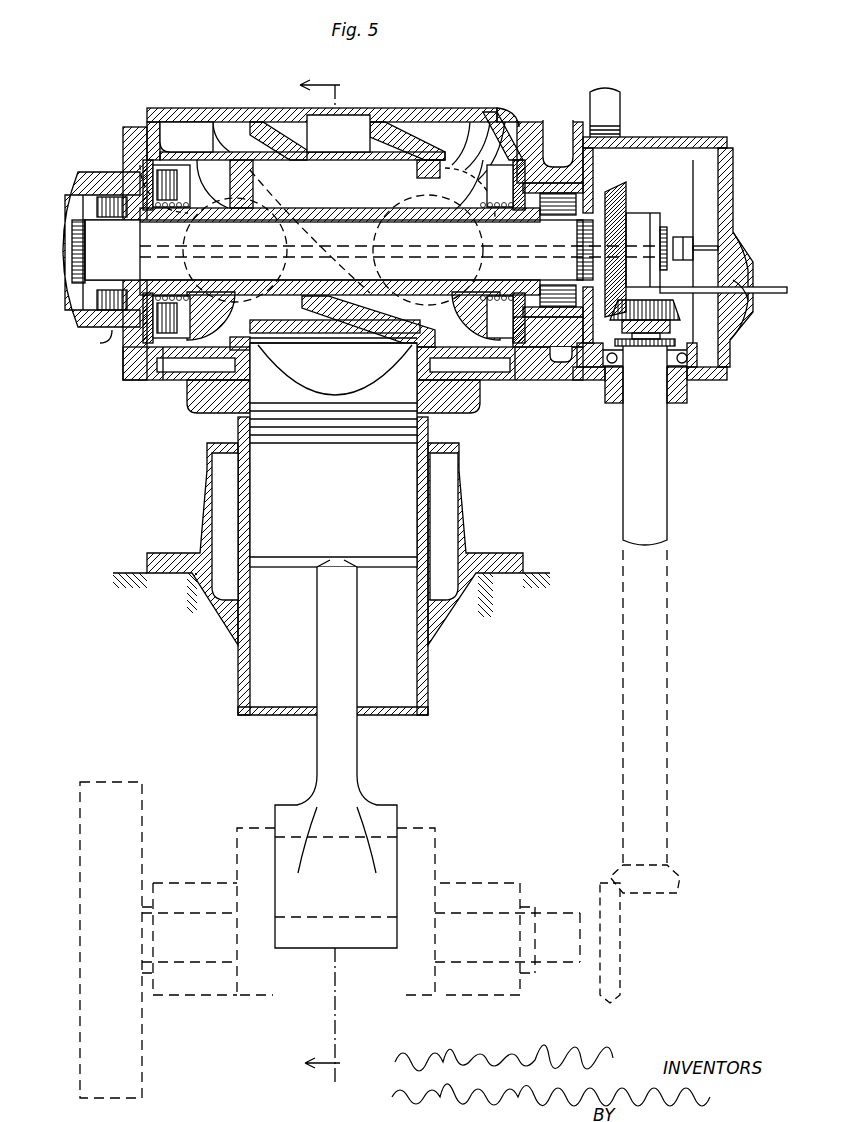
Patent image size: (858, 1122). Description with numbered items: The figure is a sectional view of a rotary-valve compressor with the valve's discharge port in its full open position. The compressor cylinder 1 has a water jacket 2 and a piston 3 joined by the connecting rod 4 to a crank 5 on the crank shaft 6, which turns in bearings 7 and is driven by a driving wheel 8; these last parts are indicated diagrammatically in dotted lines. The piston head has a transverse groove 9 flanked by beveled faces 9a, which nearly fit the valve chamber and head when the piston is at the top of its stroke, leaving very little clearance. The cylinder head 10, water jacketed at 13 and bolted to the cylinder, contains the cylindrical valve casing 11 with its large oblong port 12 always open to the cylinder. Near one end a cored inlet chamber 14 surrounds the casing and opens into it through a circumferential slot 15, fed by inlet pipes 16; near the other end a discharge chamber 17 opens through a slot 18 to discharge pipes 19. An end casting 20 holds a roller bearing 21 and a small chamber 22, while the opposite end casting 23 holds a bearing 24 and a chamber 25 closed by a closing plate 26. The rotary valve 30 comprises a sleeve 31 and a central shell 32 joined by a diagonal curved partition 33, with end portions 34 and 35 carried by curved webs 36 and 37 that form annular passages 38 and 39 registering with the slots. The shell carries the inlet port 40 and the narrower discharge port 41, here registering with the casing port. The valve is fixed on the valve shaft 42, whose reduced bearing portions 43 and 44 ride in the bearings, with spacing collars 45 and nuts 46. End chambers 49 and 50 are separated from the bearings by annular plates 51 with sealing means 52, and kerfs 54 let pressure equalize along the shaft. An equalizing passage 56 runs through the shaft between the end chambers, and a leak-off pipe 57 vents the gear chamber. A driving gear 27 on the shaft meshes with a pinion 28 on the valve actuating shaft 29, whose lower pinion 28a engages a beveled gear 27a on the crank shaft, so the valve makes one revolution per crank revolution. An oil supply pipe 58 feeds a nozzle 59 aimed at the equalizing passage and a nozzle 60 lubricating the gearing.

The compressor cylinder 1 is at (470, 516).
The water jacket 2 is at (455, 483).
The piston 3 is at (333, 455).
The connecting rod 4 is at (345, 749).
The crank 5 is at (243, 848).
The crank shaft 6 is at (552, 908).
The bearings 7 is at (204, 987).
The driving wheel 8 is at (95, 918).
The transversely disposed groove 9 is at (375, 393).
The inclined or beveled faces 9a is at (334, 370).
The cylinder head 10 is at (441, 113).
The cylindrical valve casing or chamber 11 is at (378, 152).
The valve casing port 12 is at (254, 372).
The water jacket of cylinder head 13 is at (341, 132).
The inlet chamber 14 is at (470, 150).
The circumferential slot or passage 15 is at (453, 150).
The inlet pipes 16 is at (462, 123).
The discharge chamber 17 is at (215, 125).
The circumferential slot or aperture 18 is at (214, 157).
The discharge pipes 19 is at (240, 135).
The end casting 20 is at (70, 180).
The roller bearing 21 is at (87, 328).
The chamber 22 is at (66, 251).
The end casting 23 is at (543, 120).
The valve shaft bearing 24 is at (561, 340).
The chamber 25 is at (657, 152).
The closing plate 26 is at (733, 200).
The driving gear 27 is at (622, 202).
The beveled gear 27a is at (620, 997).
The driving pinion 28 is at (664, 312).
The pinion 28a is at (680, 887).
The valve actuating shaft 29 is at (658, 526).
The rotary valve 30 is at (210, 400).
The central longitudinal sleeve portion 31 is at (307, 210).
The central cylindrical shell portion 32 is at (300, 309).
The partition 33 is at (393, 326).
The cylindrical end portion 34 is at (160, 355).
The cylindrical end portion 35 is at (516, 388).
The curved annular web or wall 36 is at (224, 302).
The curved annular web or wall 37 is at (452, 302).
The annular passage 38 is at (220, 150).
The annular passage 39 is at (472, 165).
The inlet port 40 is at (411, 218).
The discharge port 41 is at (338, 340).
The valve shaft 42 is at (270, 277).
The reducing bearing portion 43 is at (93, 234).
The reducing bearing portion 44 is at (585, 220).
The spacing collar 45 is at (546, 148).
The nuts 46 is at (72, 283).
The end chamber 49 is at (147, 162).
The end chamber 50 is at (513, 150).
The annular plate 51 is at (150, 300).
The sealing means 52 is at (141, 207).
The kerfs 54 is at (240, 165).
The equalizing passage 56 is at (363, 265).
The leak-off pipe 57 is at (612, 110).
The oil supply pipe 58 is at (767, 289).
The nozzle 59 is at (683, 237).
The nozzle 60 is at (708, 294).